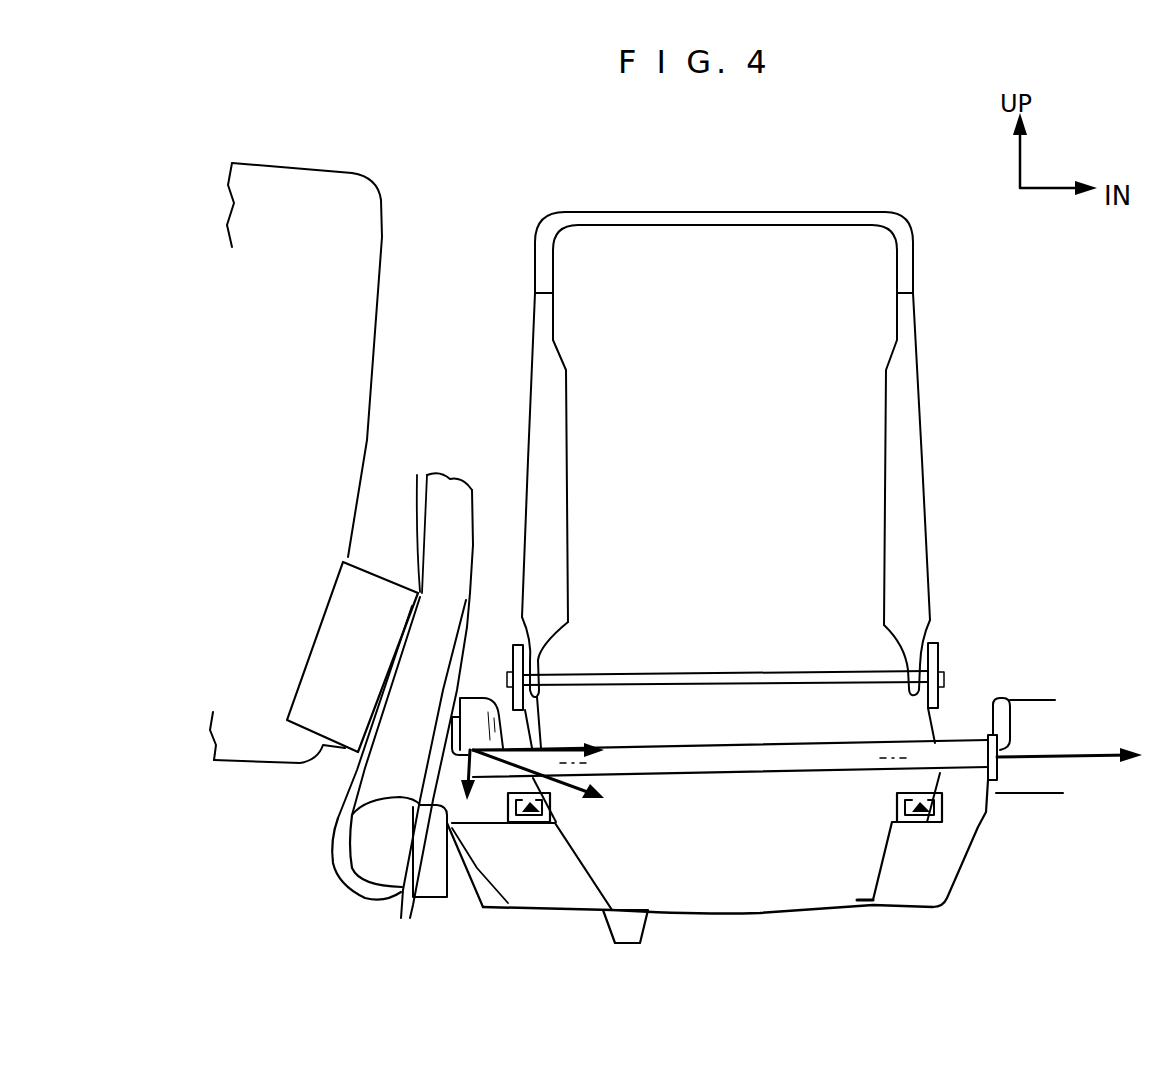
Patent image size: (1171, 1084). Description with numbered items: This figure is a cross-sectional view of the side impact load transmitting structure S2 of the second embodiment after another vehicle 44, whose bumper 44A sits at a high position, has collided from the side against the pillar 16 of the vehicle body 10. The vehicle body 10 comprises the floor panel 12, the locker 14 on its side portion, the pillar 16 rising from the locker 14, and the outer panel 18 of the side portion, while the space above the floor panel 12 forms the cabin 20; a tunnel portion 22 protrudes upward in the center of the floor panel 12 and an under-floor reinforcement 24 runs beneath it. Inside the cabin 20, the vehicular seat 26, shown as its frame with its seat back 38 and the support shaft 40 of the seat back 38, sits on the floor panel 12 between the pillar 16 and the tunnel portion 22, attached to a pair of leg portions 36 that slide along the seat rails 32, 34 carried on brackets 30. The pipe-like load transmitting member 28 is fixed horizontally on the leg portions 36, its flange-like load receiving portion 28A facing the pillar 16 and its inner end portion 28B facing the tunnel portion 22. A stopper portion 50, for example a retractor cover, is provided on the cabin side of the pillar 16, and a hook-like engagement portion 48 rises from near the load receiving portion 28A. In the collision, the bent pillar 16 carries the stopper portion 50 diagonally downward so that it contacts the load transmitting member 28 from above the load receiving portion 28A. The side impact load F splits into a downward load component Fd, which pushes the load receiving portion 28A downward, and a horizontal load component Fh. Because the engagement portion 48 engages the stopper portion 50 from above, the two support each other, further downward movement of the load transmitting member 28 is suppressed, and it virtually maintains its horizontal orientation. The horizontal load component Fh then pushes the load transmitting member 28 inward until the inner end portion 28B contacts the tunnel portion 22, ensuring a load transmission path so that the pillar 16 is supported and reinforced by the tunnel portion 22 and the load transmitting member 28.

The vehicle body 10 is at (298, 856).
The floor panel 12 is at (748, 912).
The locker 14 is at (349, 867).
The pillar 16 is at (481, 480).
The outer panel 18 is at (413, 470).
The cabin 20 is at (760, 405).
The tunnel portion 22 is at (1040, 700).
The under-floor reinforcement 24 is at (605, 923).
The vehicular seat 26 is at (668, 211).
The load transmitting member 28 is at (754, 726).
The load receiving portion 28A is at (414, 818).
The inner end portion 28B is at (1003, 697).
The brackets 30 is at (590, 875).
The seat rail 32 is at (552, 821).
The seat rail 34 is at (897, 806).
The leg portions 36 is at (548, 795).
The seat back 38 is at (921, 390).
The support shaft 40 is at (703, 671).
The other vehicle 44 is at (392, 222).
The bumper 44A is at (325, 758).
The engagement portion 48 is at (468, 662).
The stopper portion 50 is at (479, 685).
The side impact load transmitting structure S2 is at (526, 214).
The side impact load F is at (612, 795).
The horizontal load component Fh is at (560, 744).
The downward load component Fd is at (462, 740).